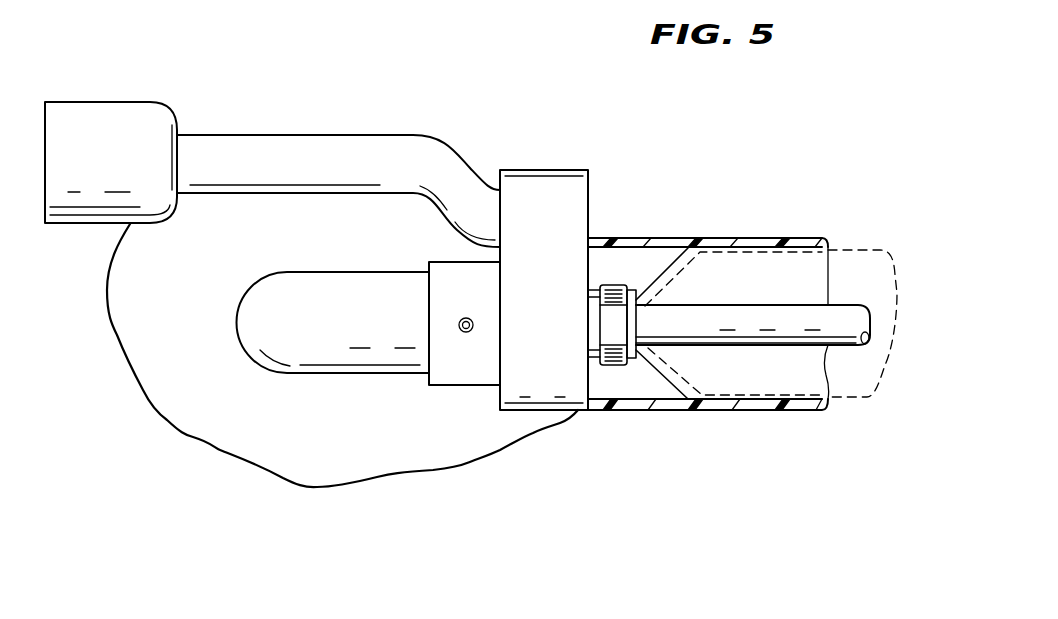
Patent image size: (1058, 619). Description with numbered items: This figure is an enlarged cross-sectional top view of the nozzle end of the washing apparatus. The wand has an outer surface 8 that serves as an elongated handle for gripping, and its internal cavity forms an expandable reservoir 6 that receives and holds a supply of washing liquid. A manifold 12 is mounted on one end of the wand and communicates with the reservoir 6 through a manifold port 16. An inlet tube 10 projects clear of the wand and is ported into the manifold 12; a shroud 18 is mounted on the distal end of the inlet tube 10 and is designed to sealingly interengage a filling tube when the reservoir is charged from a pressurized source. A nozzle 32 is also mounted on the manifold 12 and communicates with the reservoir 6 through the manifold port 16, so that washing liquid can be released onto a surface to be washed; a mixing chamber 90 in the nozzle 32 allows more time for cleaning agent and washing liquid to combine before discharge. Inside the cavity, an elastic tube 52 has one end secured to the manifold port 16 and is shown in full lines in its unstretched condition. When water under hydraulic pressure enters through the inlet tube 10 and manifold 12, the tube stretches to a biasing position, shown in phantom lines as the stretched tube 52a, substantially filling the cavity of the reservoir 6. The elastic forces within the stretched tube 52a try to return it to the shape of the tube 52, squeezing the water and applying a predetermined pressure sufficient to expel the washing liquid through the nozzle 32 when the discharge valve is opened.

The shroud 18 is at (108, 102).
The inlet tube 10 is at (240, 130).
The manifold 12 is at (540, 177).
The mixing chamber 90 is at (468, 367).
The nozzle 32 is at (257, 347).
The outer surface of wand 8 is at (772, 235).
The expandable reservoir 6 is at (733, 378).
The manifold port 16 is at (633, 332).
The elastic tube 52 is at (802, 332).
The elastic tube in stretched condition 52a is at (857, 400).